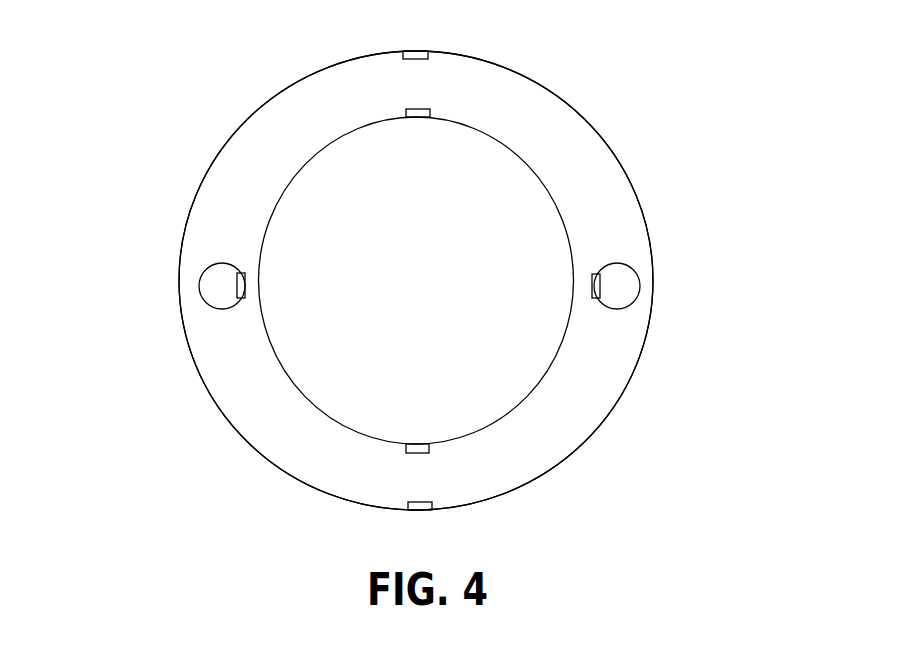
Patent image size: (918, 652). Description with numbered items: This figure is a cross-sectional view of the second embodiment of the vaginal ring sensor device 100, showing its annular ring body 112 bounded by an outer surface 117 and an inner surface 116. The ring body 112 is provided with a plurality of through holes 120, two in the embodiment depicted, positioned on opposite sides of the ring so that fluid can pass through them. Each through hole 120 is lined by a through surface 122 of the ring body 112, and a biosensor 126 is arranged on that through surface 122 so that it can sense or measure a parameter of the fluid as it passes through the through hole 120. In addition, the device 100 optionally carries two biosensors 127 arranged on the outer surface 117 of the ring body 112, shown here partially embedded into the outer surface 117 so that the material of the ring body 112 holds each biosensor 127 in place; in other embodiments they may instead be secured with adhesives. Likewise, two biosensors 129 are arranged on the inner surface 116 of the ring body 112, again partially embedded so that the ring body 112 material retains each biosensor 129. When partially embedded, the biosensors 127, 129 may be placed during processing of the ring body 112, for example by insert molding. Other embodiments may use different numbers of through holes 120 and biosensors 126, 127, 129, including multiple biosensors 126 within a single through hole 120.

The vaginal ring sensor device 100 is at (263, 74).
The ring body 112 is at (528, 93).
The inner surface 116 is at (510, 408).
The outer surface 117 is at (626, 383).
The through holes 120 is at (207, 283).
The through surface 122 is at (608, 308).
The biosensor 126 is at (240, 288).
The biosensors 127 is at (426, 53).
The biosensors 129 is at (422, 117).